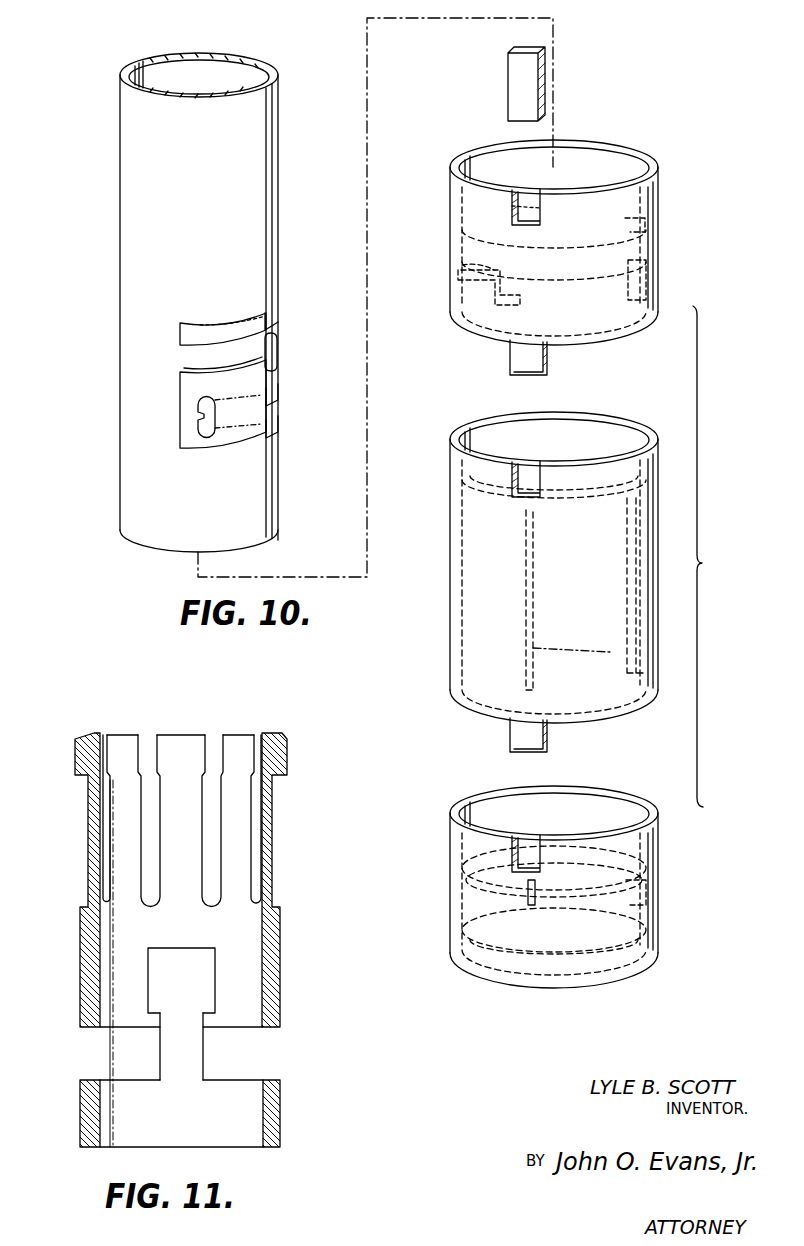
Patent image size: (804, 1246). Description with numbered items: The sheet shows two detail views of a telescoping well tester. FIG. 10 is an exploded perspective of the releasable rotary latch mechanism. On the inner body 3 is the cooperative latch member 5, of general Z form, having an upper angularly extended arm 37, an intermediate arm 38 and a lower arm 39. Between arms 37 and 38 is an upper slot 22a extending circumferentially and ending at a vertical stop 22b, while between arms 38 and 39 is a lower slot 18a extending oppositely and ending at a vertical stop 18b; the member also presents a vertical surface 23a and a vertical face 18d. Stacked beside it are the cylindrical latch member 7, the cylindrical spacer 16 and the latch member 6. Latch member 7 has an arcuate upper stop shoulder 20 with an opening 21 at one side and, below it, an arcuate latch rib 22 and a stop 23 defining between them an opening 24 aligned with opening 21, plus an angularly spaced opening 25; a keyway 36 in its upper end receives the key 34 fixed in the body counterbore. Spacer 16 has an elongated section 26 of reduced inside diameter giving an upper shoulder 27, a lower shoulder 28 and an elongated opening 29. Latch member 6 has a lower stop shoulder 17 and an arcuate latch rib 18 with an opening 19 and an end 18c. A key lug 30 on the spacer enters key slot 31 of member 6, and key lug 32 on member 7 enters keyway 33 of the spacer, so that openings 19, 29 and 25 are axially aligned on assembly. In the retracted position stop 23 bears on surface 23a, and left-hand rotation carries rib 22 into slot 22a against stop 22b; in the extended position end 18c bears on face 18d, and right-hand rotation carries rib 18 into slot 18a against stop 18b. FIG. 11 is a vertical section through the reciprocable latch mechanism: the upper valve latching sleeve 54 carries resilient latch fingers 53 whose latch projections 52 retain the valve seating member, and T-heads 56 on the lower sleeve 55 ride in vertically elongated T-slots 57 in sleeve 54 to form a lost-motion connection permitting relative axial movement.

In FIG. 10, the inner body 3 is at (120, 222).
In FIG. 10, the cooperative latch member 5 is at (229, 322).
In FIG. 10, the upper angularly extended arm 37 is at (198, 328).
In FIG. 10, the upper slot 22a is at (200, 358).
In FIG. 10, the vertical stop 22b is at (272, 353).
In FIG. 10, the vertical surface 23a is at (278, 325).
In FIG. 10, the vertical face 18d is at (192, 391).
In FIG. 10, the vertical stop 18b is at (205, 416).
In FIG. 10, the lower slot 18a is at (242, 436).
In FIG. 10, the intermediate arm 38 is at (246, 391).
In FIG. 10, the lower arm 39 is at (258, 437).
In FIG. 10, the key 34 is at (508, 105).
In FIG. 10, the latch member 7 is at (662, 198).
In FIG. 10, the opening 21 is at (498, 208).
In FIG. 10, the keyway 36 is at (530, 208).
In FIG. 10, the upper stop shoulder 20 is at (472, 250).
In FIG. 10, the opening 24 is at (520, 283).
In FIG. 10, the stop 23 is at (640, 268).
In FIG. 10, the opening 25 is at (648, 296).
In FIG. 10, the latch rib 22 is at (500, 310).
In FIG. 10, the key lug 32 is at (548, 362).
In FIG. 10, the cylindrical spacer 16 is at (660, 458).
In FIG. 10, the keyway 33 is at (522, 473).
In FIG. 10, the upper shoulder 27 is at (470, 493).
In FIG. 10, the elongated section of reduced inside diameter 26 is at (485, 591).
In FIG. 10, the lower shoulder 28 is at (602, 655).
In FIG. 10, the elongated opening 29 is at (612, 622).
In FIG. 10, the key lug 30 is at (550, 740).
In FIG. 10, the latch member 6 is at (662, 860).
In FIG. 10, the key slot 31 is at (520, 848).
In FIG. 10, the latch rib 18 is at (480, 874).
In FIG. 10, the opening 19 is at (642, 900).
In FIG. 10, the end of latch rib 18c is at (500, 914).
In FIG. 10, the lower stop shoulder 17 is at (636, 943).
In FIG. 11, the latch projections 52 is at (275, 745).
In FIG. 11, the resilient latch fingers 53 is at (268, 828).
In FIG. 11, the upper valve latching sleeve 54 is at (280, 916).
In FIG. 11, the lower sleeve 55 is at (270, 1094).
In FIG. 11, the T-heads 56 is at (192, 1052).
In FIG. 11, the T-slots 57 is at (216, 958).